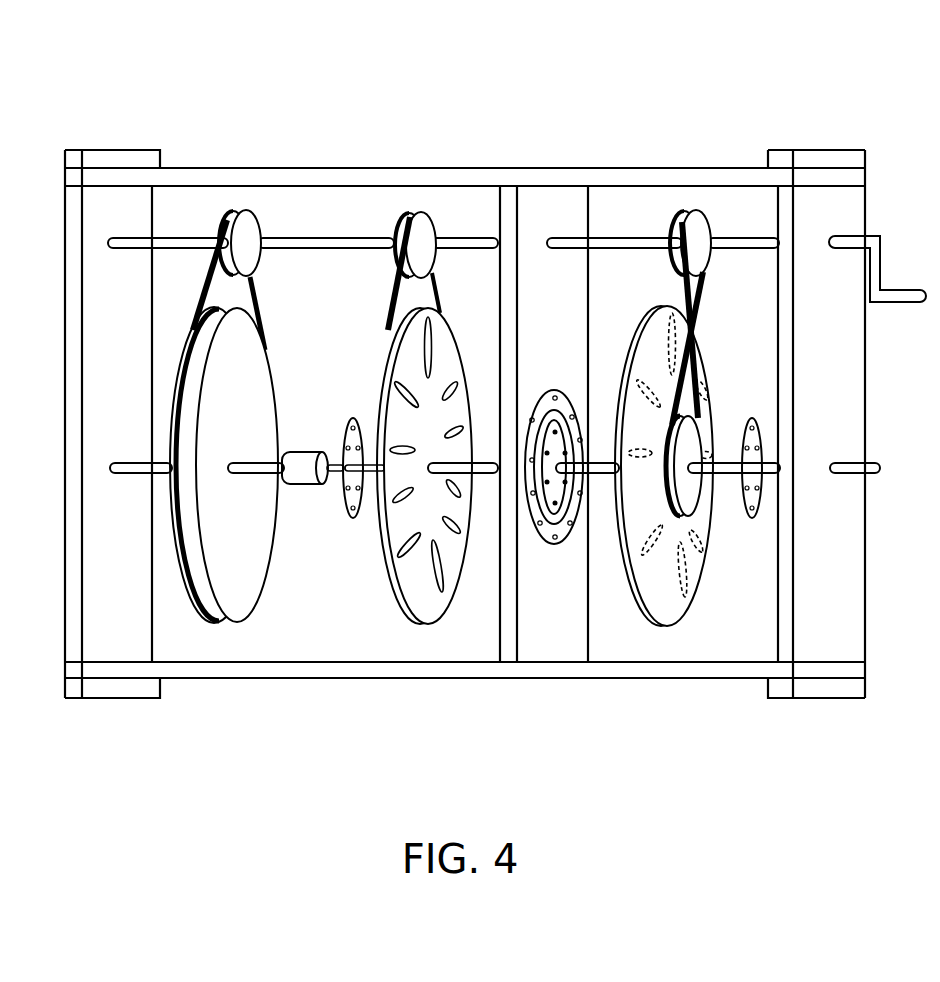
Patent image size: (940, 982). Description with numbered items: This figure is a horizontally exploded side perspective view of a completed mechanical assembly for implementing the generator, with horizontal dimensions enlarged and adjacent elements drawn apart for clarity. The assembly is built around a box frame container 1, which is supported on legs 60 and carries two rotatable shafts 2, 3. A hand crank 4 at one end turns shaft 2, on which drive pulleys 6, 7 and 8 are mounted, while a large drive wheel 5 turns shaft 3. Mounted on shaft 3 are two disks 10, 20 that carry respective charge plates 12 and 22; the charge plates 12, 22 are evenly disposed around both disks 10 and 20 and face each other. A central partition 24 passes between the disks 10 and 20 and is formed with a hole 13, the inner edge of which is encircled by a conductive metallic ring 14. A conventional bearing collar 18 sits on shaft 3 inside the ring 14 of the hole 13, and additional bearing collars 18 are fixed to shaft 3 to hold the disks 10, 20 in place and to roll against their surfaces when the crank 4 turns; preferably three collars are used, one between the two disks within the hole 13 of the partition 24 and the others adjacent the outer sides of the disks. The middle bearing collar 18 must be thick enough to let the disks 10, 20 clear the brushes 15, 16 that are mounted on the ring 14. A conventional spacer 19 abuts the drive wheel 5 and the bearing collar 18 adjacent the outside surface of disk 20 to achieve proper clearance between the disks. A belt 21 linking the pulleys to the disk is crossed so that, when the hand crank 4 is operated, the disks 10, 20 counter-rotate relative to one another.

The box frame container 1 is at (341, 168).
The shaft 2 is at (601, 238).
The shaft 3 is at (135, 475).
The hand crank 4 is at (883, 275).
The large drive wheel 5 is at (233, 626).
The drive pulley 6 is at (247, 212).
The drive pulley 7 is at (408, 213).
The drive pulley 8 is at (704, 212).
The disk 10 is at (655, 306).
The charge plates 12 is at (687, 593).
The hole 13 is at (563, 525).
The conductive metallic ring 14 is at (537, 530).
The brush 15 is at (543, 540).
The brush 16 is at (557, 540).
The bearing collar 18 is at (353, 520).
The spacer 19 is at (297, 487).
The disk 20 is at (455, 340).
The belt 21 is at (698, 300).
The charge plates 22 is at (405, 560).
The central partition 24 is at (545, 200).
The legs 60 is at (115, 150).